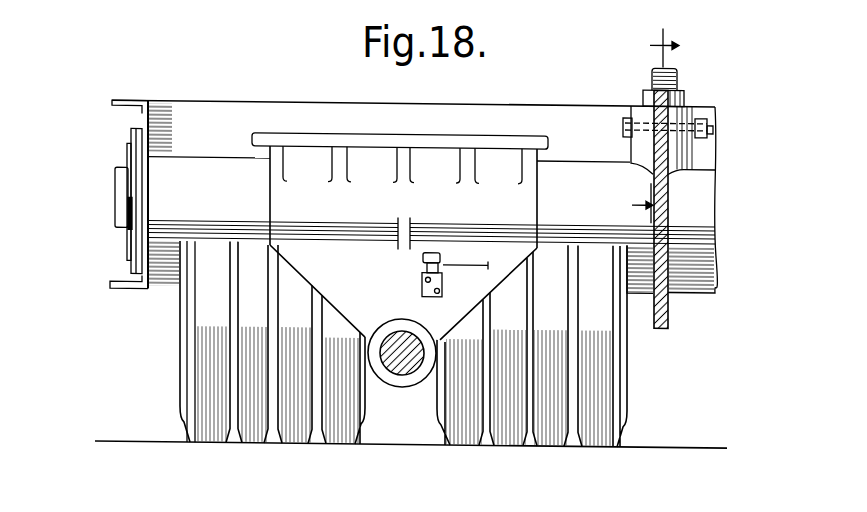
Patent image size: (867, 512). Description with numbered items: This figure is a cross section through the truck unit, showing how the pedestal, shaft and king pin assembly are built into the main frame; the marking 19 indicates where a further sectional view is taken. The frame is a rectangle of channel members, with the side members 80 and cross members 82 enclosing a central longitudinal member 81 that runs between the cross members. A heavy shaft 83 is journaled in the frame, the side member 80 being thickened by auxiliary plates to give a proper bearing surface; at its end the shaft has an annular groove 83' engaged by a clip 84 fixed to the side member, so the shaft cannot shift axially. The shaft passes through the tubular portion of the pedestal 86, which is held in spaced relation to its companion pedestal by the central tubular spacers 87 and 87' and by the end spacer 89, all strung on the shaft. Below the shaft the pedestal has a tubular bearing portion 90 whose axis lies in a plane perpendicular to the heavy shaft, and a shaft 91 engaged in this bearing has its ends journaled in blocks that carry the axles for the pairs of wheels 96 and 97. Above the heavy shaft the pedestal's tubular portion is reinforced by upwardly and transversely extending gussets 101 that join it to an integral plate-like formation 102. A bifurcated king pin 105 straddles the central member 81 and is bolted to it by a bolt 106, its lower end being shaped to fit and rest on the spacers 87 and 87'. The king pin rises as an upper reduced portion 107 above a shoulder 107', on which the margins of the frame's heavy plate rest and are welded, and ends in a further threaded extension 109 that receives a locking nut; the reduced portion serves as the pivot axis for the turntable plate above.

The side member 80 is at (140, 113).
The central longitudinal member 81 is at (668, 309).
The cross member 82 is at (248, 88).
The heavy shaft 83 is at (100, 197).
The annular groove 83' is at (113, 232).
The clip 84 is at (127, 146).
The pedestal 86 is at (403, 243).
The central tubular spacer 87 is at (691, 200).
The central tubular spacer 87' is at (583, 182).
The end spacer 89 is at (209, 180).
The tubular bearing portion 90 is at (415, 378).
The shaft 91 is at (395, 361).
The pair of wheels 96 is at (550, 435).
The pair of wheels 97 is at (288, 432).
The gusset 101 is at (341, 163).
The plate-like formation 102 is at (428, 134).
The bifurcated king pin 105 is at (637, 140).
The bolt 106 is at (713, 122).
The upper reduced portion 107 is at (693, 87).
The shoulder 107' is at (724, 128).
The threaded extension 109 is at (673, 65).
The section line 19- 19 is at (643, 126).